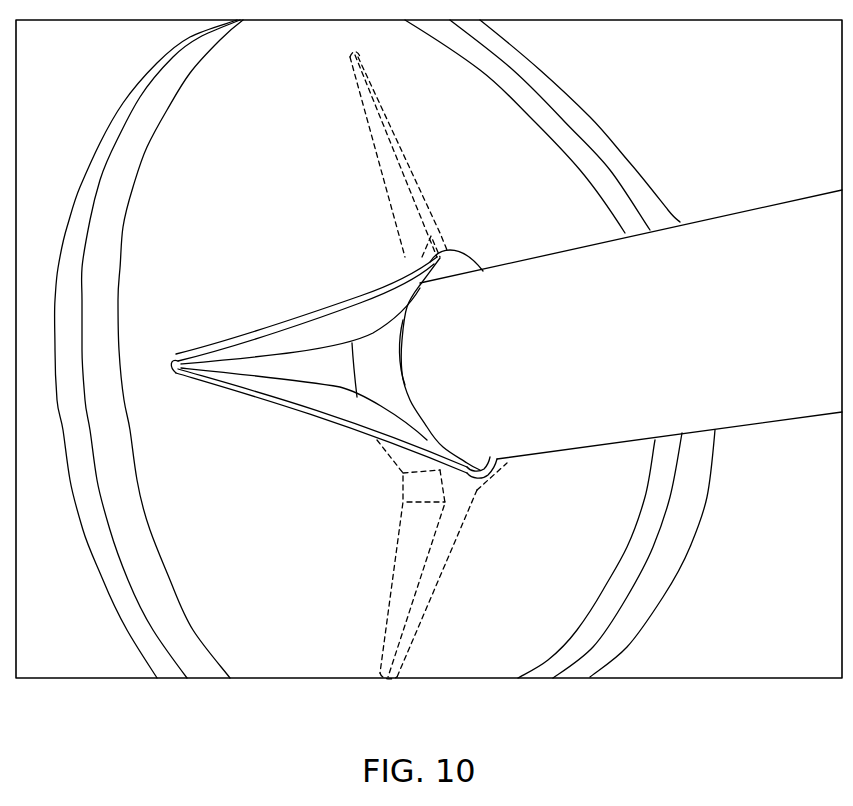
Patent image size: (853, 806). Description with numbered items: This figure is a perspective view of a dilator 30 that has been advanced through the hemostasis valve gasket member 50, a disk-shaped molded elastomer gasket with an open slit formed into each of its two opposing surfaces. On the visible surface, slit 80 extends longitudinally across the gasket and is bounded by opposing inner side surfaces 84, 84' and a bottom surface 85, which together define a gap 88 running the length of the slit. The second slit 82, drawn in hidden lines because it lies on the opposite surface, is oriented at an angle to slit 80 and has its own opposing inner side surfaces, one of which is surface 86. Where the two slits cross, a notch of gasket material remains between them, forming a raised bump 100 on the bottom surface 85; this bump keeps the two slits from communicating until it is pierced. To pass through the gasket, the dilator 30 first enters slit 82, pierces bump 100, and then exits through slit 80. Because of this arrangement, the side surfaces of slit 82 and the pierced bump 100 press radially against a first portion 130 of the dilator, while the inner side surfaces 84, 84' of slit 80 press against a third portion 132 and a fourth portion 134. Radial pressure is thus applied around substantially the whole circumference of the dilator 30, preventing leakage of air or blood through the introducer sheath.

The dilator 30 is at (757, 222).
The hemostasis valve gasket member 50 is at (51, 309).
The slit 80 is at (317, 417).
The slit 82 is at (345, 107).
The inner side surface 84 is at (306, 310).
The inner side surface 84' is at (304, 409).
The bottom surface 85 is at (307, 363).
The inner side surface 86 is at (405, 571).
The gap 88 is at (227, 366).
The bump 100 is at (383, 352).
The first portion 130 is at (428, 385).
The third portion 132 is at (481, 297).
The fourth portion 134 is at (487, 447).